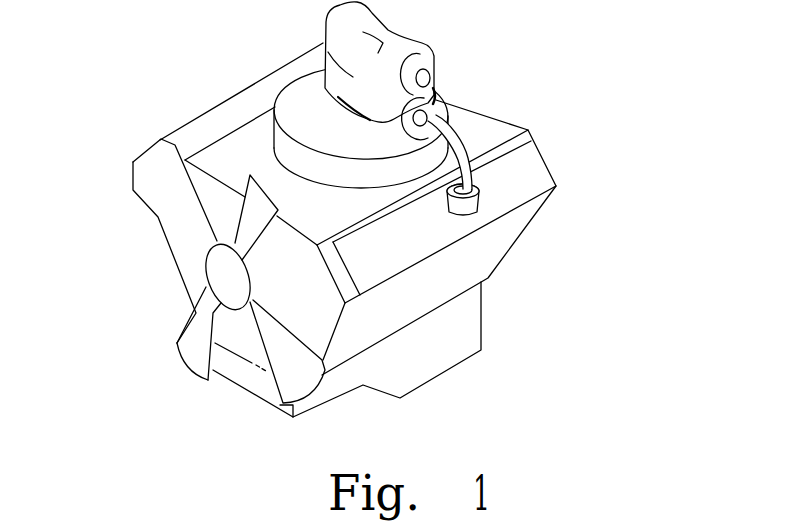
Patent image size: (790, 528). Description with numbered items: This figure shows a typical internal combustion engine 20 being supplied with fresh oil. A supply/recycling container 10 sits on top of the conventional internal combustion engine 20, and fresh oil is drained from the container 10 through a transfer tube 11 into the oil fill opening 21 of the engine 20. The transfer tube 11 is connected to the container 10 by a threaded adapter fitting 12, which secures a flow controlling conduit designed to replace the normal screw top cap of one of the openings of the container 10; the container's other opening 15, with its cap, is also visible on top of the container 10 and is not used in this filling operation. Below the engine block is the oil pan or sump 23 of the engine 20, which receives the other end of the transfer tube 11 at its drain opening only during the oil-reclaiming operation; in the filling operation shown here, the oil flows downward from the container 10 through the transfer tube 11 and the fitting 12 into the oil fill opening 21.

The supply/recycling container 10 is at (305, 37).
The transfer tube 11 is at (459, 149).
The threaded adapter fitting 12 is at (430, 113).
The thermostat housing outlet 15 is at (431, 72).
The internal combustion engine 20 is at (507, 248).
The oil fill opening 21 is at (479, 203).
The oil pan or sump 23 is at (480, 344).